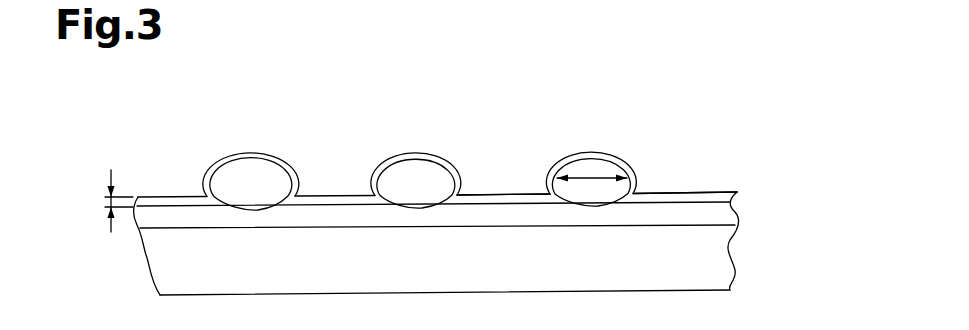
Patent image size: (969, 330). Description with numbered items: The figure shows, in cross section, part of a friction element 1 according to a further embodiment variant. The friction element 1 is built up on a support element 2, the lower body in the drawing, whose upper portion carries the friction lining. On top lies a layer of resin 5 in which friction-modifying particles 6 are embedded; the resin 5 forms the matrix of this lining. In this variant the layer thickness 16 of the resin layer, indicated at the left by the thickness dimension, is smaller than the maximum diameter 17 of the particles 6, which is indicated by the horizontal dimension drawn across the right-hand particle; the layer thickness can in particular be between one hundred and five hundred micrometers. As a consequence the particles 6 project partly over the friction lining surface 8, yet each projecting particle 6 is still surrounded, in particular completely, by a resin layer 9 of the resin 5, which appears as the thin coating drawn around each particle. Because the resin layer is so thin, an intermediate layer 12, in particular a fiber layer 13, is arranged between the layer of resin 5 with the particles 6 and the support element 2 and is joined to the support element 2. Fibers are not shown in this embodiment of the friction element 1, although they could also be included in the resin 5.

The friction element 1 is at (717, 160).
The support element 2 is at (703, 242).
The resin 5 is at (495, 197).
The friction-modifying particles 6 is at (415, 168).
The friction lining surface 8 is at (330, 195).
The resin layer 9 is at (233, 150).
The intermediate layer 12 is at (748, 212).
The fiber layer 13 is at (717, 218).
The layer thickness 16 is at (105, 208).
The maximum diameter 17 is at (598, 177).